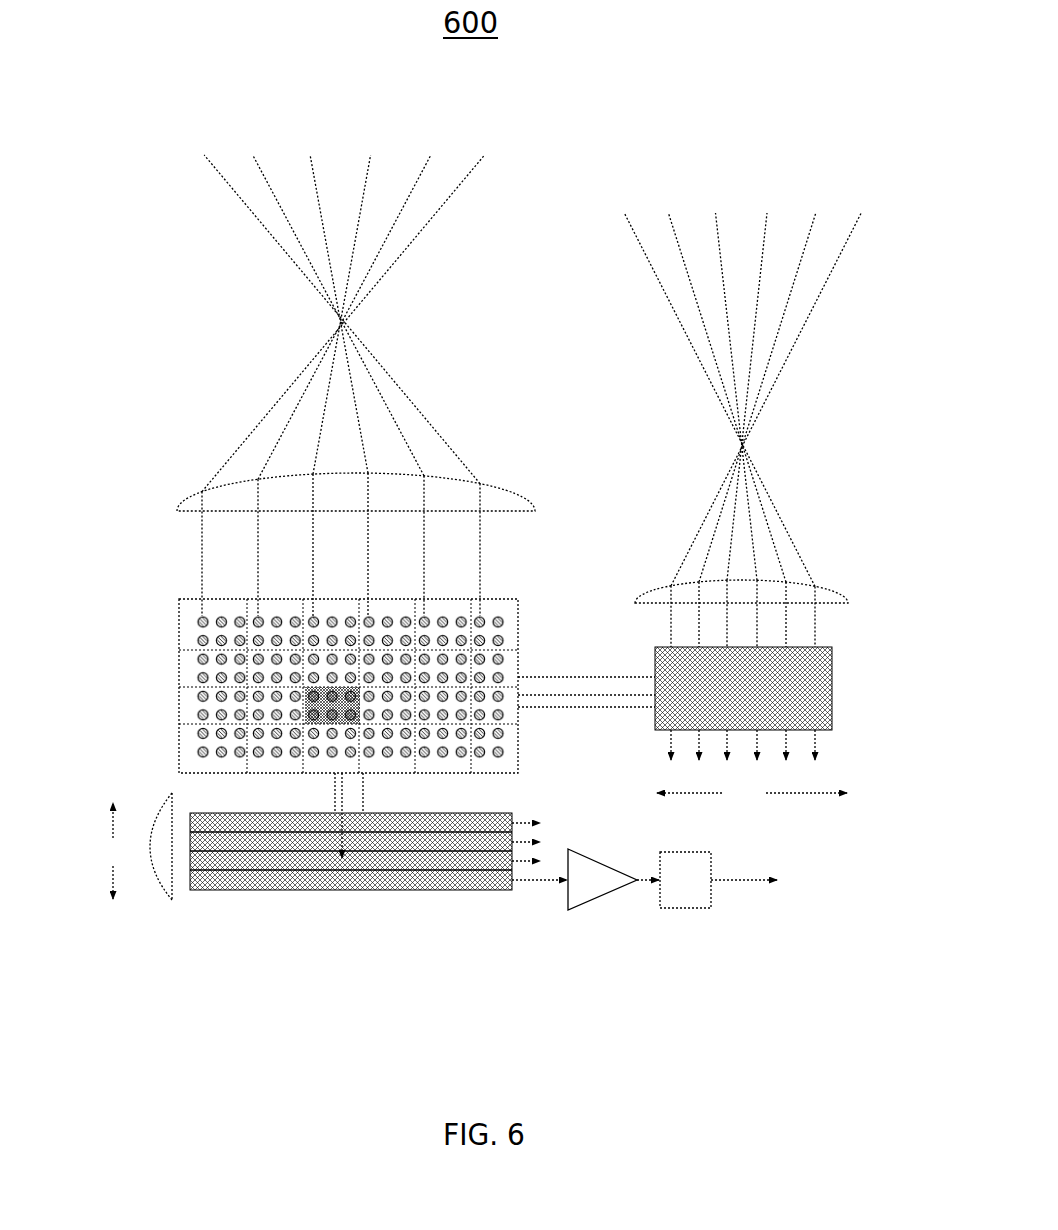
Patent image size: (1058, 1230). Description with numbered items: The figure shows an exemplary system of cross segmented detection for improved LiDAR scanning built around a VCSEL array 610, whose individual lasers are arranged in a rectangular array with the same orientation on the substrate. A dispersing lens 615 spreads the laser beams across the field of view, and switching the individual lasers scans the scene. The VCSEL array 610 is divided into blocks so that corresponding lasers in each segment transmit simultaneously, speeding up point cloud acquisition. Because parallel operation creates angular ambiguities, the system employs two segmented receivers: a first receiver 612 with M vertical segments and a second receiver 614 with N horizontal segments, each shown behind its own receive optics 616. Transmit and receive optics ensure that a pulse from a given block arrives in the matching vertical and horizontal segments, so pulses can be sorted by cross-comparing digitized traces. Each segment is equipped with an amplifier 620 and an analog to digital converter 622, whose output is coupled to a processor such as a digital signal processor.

The VCSEL array 610 is at (168, 597).
The first receiver 612 is at (850, 647).
The second receiver 614 is at (250, 902).
The dispersing lens 615 is at (513, 480).
The receiver lens 616 is at (830, 572).
The amplifier 620 is at (592, 923).
The analog to digital converter 622 is at (685, 925).